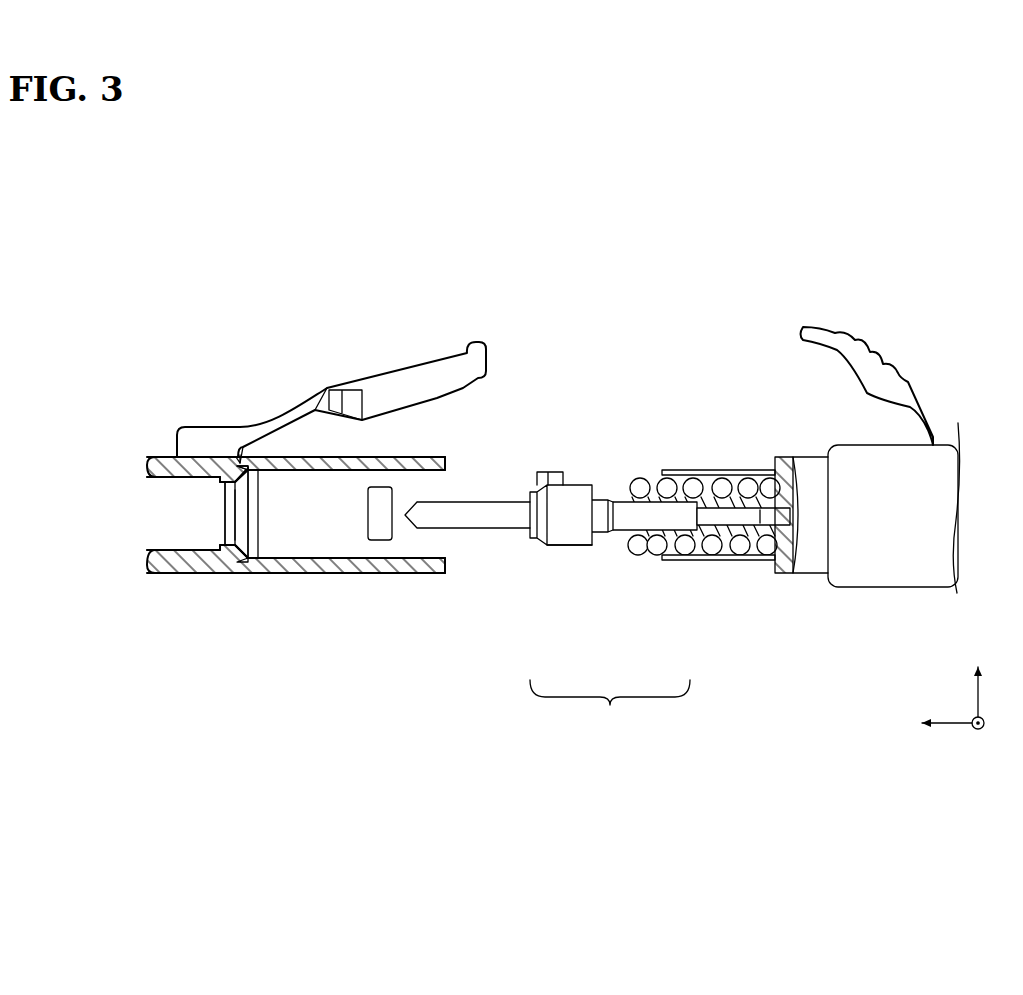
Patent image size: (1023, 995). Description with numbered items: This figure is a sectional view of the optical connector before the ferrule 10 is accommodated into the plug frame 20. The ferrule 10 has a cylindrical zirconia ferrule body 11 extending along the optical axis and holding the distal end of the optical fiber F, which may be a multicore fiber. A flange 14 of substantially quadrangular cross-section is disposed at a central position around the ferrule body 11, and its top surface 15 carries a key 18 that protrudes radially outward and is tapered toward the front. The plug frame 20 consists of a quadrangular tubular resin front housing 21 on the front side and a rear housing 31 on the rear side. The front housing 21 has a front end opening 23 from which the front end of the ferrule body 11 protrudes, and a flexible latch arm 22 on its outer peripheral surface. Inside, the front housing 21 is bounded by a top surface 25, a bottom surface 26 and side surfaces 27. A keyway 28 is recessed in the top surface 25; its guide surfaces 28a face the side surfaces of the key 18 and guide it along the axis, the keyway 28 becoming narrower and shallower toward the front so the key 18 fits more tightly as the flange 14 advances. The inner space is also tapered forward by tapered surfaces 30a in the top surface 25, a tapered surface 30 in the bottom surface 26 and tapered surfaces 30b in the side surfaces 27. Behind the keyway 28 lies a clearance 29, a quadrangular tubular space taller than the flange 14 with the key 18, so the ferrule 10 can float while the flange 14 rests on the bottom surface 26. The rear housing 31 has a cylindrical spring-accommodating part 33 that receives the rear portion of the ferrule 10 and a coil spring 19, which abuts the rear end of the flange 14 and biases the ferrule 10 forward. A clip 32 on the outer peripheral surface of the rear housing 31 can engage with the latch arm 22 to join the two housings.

The ferrule 10 is at (514, 557).
The ferrule body 11 is at (483, 510).
The flange 14 is at (573, 549).
The top surface 15 is at (580, 484).
The key 18 is at (548, 465).
The coil spring 19 is at (694, 484).
The plug frame 20 is at (542, 528).
The front housing 21 is at (435, 573).
The latch arm 22 is at (430, 373).
The front end opening 23 is at (147, 513).
The top surface 25 is at (372, 473).
The bottom surface 26 is at (360, 560).
The side surfaces 27 is at (403, 550).
The keyway 28 is at (238, 460).
The guide surfaces 28a is at (237, 465).
The clearance 29 is at (260, 498).
The tapered surface 30 is at (248, 558).
The tapered surfaces 30a is at (248, 478).
The tapered surfaces 30b is at (250, 517).
The rear housing 31 is at (845, 573).
The clip 32 is at (873, 348).
The spring-accommodating part 33 is at (693, 561).
The optical fiber F is at (757, 523).